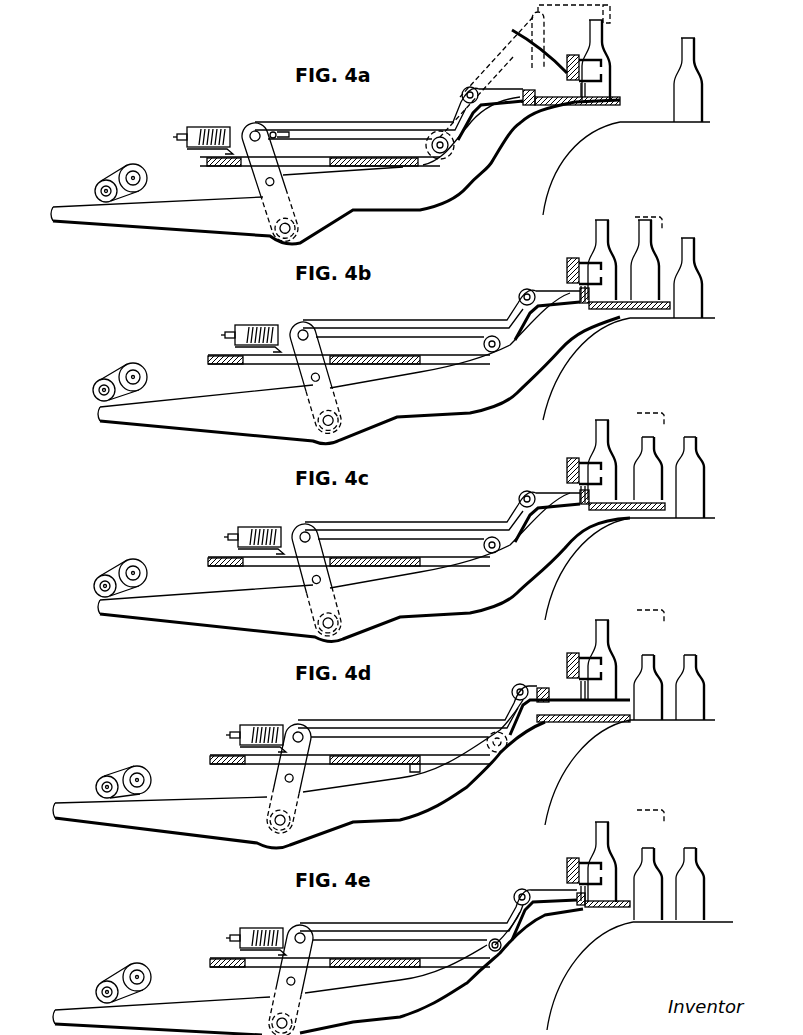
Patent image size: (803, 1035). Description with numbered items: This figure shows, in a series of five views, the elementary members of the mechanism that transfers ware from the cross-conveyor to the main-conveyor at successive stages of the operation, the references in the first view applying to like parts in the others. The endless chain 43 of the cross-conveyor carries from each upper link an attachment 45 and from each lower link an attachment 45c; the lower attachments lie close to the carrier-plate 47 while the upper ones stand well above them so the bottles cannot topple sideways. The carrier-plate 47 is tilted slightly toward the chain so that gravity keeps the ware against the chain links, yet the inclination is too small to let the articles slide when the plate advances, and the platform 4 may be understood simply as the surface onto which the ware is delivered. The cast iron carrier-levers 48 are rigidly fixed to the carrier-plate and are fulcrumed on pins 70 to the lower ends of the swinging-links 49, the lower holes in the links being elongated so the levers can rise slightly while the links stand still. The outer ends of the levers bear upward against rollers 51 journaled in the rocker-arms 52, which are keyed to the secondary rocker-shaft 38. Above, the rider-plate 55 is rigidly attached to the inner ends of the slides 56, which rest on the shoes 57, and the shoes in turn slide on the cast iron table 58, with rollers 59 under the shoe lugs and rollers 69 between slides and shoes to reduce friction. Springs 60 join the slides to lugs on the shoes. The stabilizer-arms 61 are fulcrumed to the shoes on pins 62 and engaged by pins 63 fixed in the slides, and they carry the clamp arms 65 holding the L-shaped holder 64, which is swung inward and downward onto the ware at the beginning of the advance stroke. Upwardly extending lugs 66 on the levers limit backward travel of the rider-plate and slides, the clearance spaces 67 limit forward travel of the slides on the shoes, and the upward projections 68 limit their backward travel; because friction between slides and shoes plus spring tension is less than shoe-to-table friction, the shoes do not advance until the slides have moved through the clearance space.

In FIG. 4A, the platform 4 is at (633, 121).
In FIG. 4A, the secondary rocker-shaft 38 is at (128, 171).
In FIG. 4A, the endless chain 43 is at (528, 41).
In FIG. 4A, the attachment 45 is at (602, 58).
In FIG. 4A, the attachment 45c is at (610, 72).
In FIG. 4A, the carrier-plate 47 is at (618, 97).
In FIG. 4A, the carrier-levers 48 is at (335, 172).
In FIG. 4A, the swinging-links 49 is at (248, 124).
In FIG. 4A, the rollers 51 is at (95, 192).
In FIG. 4A, the rocker-arms 52 is at (113, 170).
In FIG. 4A, the rider-plate 55 is at (558, 87).
In FIG. 4A, the slides 56 is at (407, 122).
In FIG. 4A, the shoes 57 is at (187, 148).
In FIG. 4A, the cast iron table 58 is at (404, 170).
In FIG. 4A, the rollers 59 is at (208, 162).
In FIG. 4A, the springs 60 is at (210, 126).
In FIG. 4A, the stabilizer-arms 61 is at (502, 58).
In FIG. 4A, the pins 62 is at (452, 152).
In FIG. 4A, the pins 63 is at (463, 92).
In FIG. 4A, the L-shaped holder 64 is at (611, 15).
In FIG. 4B, the L-shaped holder 64 is at (665, 216).
In FIG. 4C, the L-shaped holder 64 is at (667, 413).
In FIG. 4D, the L-shaped holder 64 is at (667, 610).
In FIG. 4E, the L-shaped holder 64 is at (667, 810).
In FIG. 4A, the clamp arms 65 is at (541, 22).
In FIG. 4A, the lugs 66 is at (522, 90).
In FIG. 4A, the clearance spaces 67 is at (274, 131).
In FIG. 4B, the upward projections 68 is at (302, 322).
In FIG. 4C, the upward projections 68 is at (304, 524).
In FIG. 4A, the rollers 69 is at (289, 132).
In FIG. 4A, the pins 70 is at (274, 237).